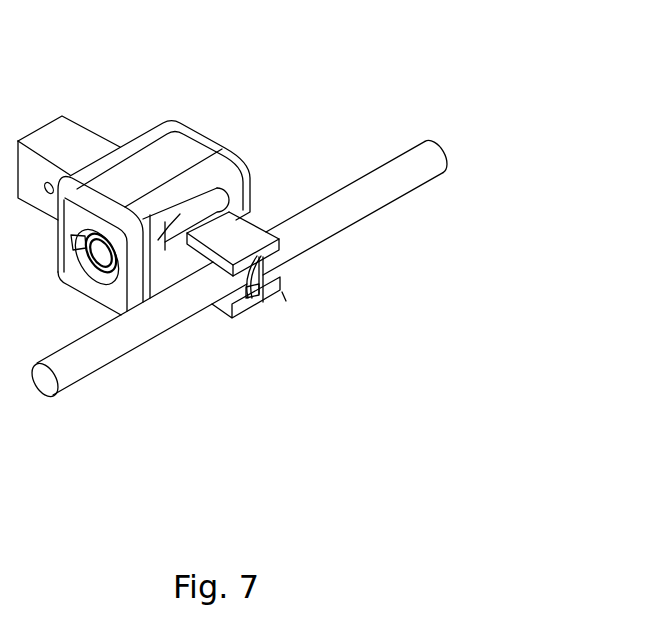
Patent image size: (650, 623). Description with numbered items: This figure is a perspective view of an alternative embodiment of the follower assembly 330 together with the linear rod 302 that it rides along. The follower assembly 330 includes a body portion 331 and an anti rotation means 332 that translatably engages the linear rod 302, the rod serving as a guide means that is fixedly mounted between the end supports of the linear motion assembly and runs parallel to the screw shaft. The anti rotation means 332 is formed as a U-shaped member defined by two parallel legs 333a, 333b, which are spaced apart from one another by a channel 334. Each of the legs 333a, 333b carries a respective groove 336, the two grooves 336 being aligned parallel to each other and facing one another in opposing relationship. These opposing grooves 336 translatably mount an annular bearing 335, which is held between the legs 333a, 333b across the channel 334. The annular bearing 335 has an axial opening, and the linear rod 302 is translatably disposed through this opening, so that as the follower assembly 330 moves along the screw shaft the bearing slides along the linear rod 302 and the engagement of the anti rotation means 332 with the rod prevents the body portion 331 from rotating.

The linear rod 302 is at (442, 139).
The follower assembly 330 is at (90, 121).
The body portion 331 is at (163, 153).
The anti rotation means 332 is at (234, 235).
The leg 333a is at (262, 221).
The leg 333b is at (213, 310).
The channel 334 is at (284, 301).
The annular bearing 335 is at (250, 295).
The groove 336 is at (257, 262).